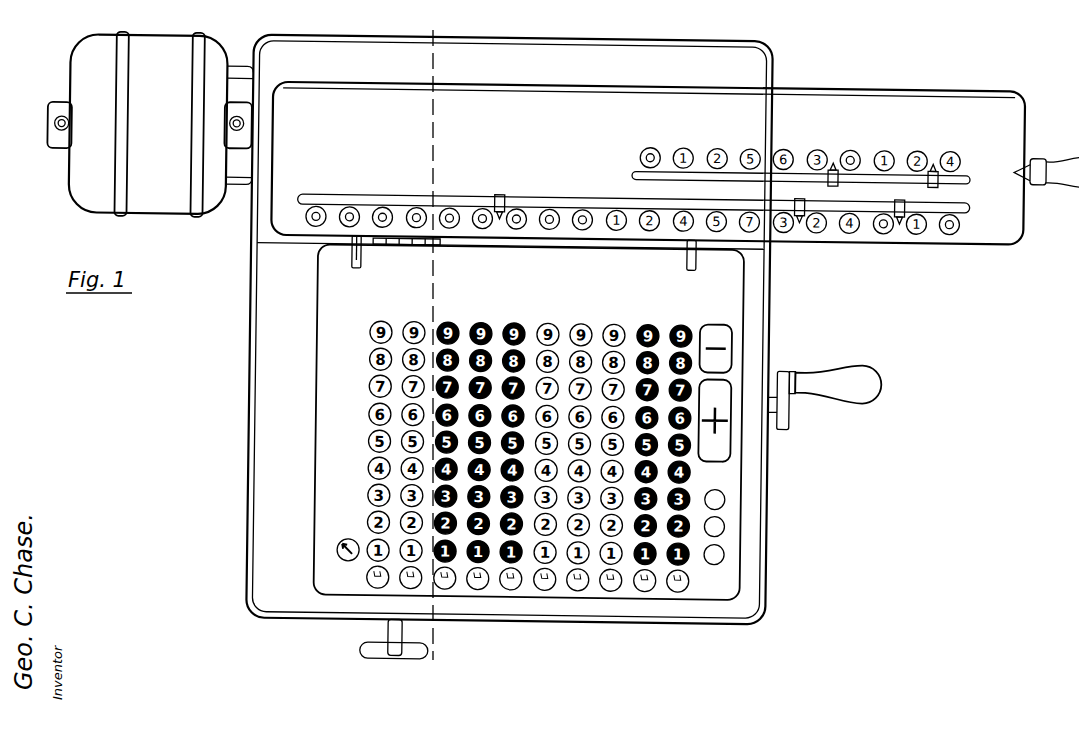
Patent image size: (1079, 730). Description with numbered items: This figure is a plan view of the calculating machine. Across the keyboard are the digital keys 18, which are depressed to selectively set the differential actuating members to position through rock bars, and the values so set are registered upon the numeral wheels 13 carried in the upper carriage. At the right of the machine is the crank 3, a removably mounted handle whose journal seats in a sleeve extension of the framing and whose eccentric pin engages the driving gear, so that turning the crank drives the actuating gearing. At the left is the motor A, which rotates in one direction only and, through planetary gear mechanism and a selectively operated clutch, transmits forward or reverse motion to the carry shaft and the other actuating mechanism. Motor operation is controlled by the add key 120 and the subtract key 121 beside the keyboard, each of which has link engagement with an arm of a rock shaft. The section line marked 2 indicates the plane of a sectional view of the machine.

The motor A is at (172, 211).
The section line 2- 2 is at (410, 666).
The crank 3 is at (845, 386).
The numeral wheels 13 is at (858, 231).
The digital keys 18 is at (550, 322).
The add key 120 is at (733, 447).
The subtract key 121 is at (733, 352).